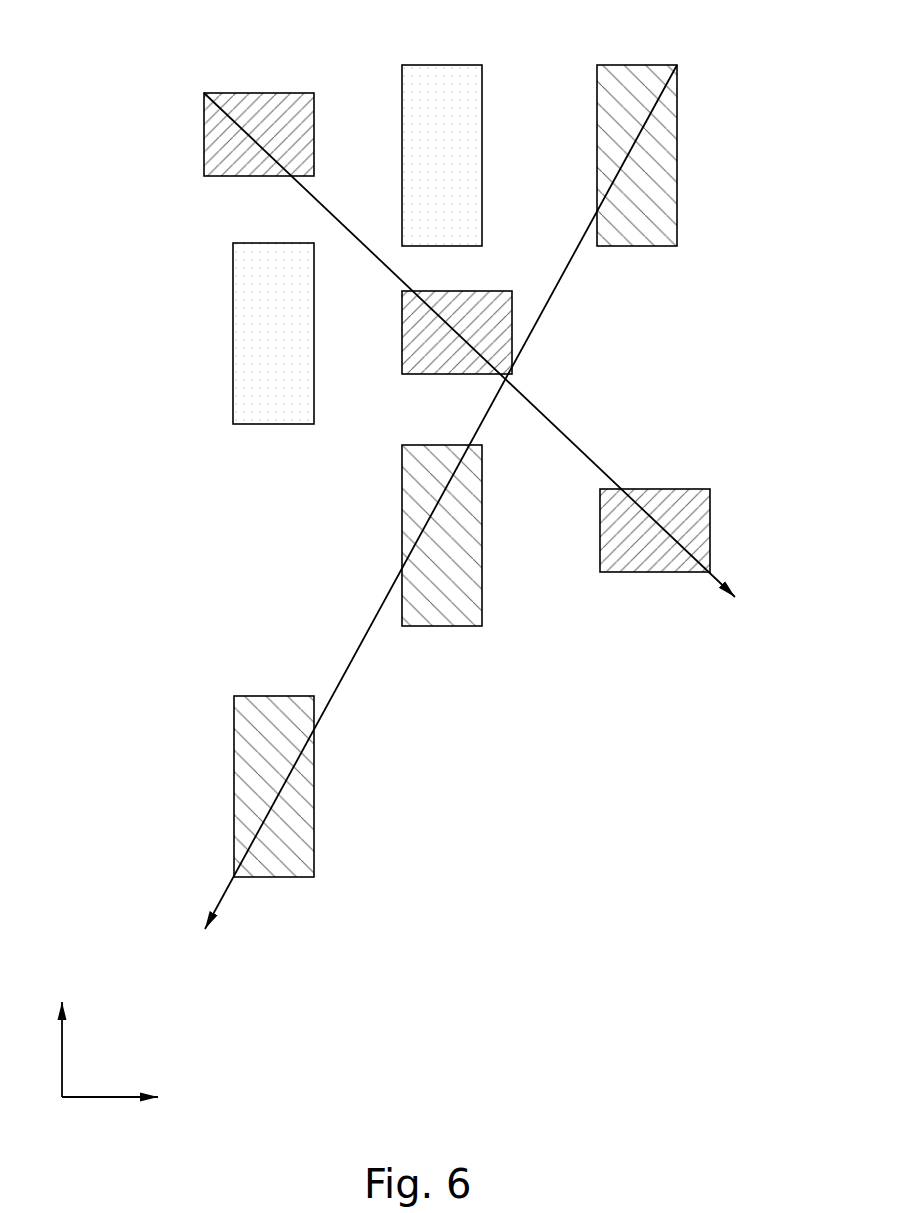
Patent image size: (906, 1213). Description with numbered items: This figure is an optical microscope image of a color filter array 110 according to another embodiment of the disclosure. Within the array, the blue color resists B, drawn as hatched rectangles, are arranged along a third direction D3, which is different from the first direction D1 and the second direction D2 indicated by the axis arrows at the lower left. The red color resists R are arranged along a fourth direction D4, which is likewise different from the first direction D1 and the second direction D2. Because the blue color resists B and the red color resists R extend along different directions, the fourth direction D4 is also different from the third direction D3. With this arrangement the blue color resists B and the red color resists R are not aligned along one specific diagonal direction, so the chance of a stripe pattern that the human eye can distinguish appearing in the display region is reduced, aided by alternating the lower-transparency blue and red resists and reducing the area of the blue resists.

The color filter array 110 is at (155, 40).
The blue color resists B is at (204, 136).
The red color resists R is at (672, 139).
The first direction D1 is at (61, 1029).
The second direction D2 is at (135, 1098).
The third direction D3 is at (493, 361).
The fourth direction D4 is at (424, 515).